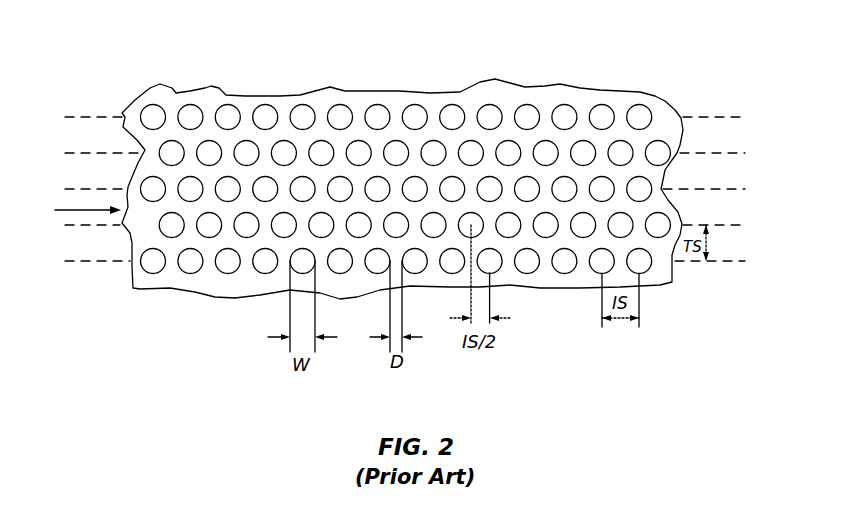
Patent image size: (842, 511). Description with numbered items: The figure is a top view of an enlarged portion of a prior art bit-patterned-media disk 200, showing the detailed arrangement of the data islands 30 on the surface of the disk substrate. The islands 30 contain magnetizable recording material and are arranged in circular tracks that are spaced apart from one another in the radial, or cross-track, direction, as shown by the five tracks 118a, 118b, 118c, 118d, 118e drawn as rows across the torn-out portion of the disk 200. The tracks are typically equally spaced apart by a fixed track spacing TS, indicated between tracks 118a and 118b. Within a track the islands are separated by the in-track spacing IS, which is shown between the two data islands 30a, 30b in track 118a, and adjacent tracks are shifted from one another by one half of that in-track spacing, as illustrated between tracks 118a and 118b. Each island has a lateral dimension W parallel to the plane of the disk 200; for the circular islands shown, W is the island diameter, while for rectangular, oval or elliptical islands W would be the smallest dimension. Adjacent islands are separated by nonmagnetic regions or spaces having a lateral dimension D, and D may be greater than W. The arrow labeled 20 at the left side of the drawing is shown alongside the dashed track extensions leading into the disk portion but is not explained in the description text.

The machine direction / web travel direction 20 is at (74, 209).
The data islands 30 is at (302, 105).
The data island 30a is at (596, 262).
The data island 30b is at (644, 262).
The track 118a is at (717, 261).
The track 118b is at (717, 225).
The track 118c is at (717, 189).
The track 118d is at (717, 153).
The track 118e is at (717, 117).
The disk 200 is at (226, 298).